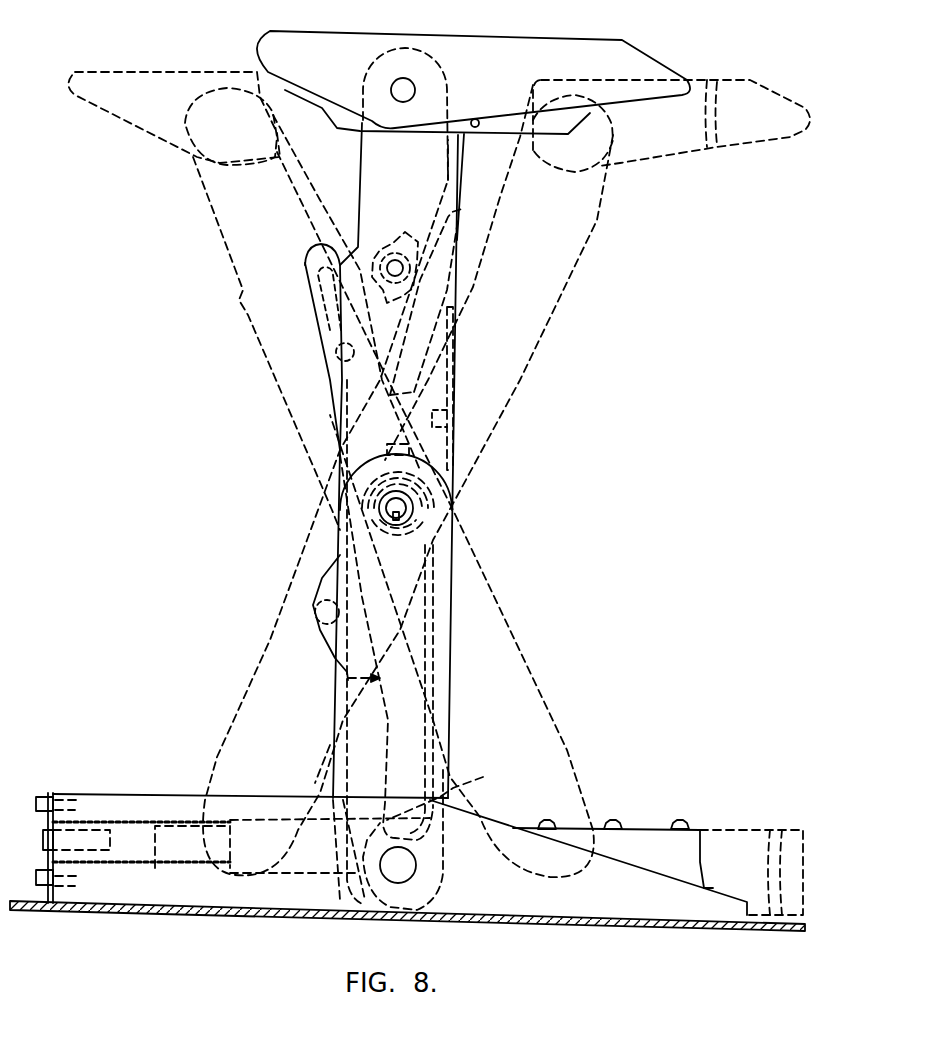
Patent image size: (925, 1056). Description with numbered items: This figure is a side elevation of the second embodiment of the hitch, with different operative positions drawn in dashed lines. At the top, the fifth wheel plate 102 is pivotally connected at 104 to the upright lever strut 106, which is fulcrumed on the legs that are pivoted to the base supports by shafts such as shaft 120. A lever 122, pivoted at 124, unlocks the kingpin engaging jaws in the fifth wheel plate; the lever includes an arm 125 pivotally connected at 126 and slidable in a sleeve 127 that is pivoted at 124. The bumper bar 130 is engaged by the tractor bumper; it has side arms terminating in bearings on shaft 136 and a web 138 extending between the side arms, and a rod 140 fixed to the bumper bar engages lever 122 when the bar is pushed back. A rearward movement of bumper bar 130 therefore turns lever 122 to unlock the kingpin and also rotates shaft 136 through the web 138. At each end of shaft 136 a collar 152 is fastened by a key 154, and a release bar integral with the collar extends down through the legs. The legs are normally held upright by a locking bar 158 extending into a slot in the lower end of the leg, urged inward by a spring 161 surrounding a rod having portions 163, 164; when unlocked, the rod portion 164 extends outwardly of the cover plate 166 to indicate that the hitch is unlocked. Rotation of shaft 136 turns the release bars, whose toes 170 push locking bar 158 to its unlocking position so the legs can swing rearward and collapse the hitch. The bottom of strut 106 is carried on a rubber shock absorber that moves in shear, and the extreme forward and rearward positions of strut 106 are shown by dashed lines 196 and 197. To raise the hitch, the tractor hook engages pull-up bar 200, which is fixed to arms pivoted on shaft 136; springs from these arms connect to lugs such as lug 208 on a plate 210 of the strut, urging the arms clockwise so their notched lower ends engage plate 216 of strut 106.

The fifth wheel plate 102 is at (592, 45).
The pivotal connection 104 is at (415, 90).
The lever strut 106 is at (382, 156).
The shaft 120 is at (412, 868).
The lever 122 is at (468, 186).
The pivot 124 is at (392, 262).
The arm 125 is at (470, 162).
The pivotal connection 126 is at (478, 122).
The sleeve 127 is at (447, 300).
The bumper bar 130 is at (305, 263).
The shaft 136 is at (394, 508).
The web 138 is at (323, 306).
The rod 140 is at (336, 352).
The collar 152 is at (415, 505).
The key 154 is at (396, 522).
The locking bar 158 is at (305, 800).
The spring 161 is at (135, 820).
The rod portion 163 is at (188, 868).
The rod portion 164 is at (130, 868).
The cover plate 166 is at (50, 792).
The toe 170 is at (497, 772).
The dashed line 196 is at (268, 640).
The dashed line 197 is at (525, 648).
The pull-up bar 200 is at (320, 600).
The lug 208 is at (447, 412).
The plate 210 is at (455, 378).
The plate 216 is at (345, 706).